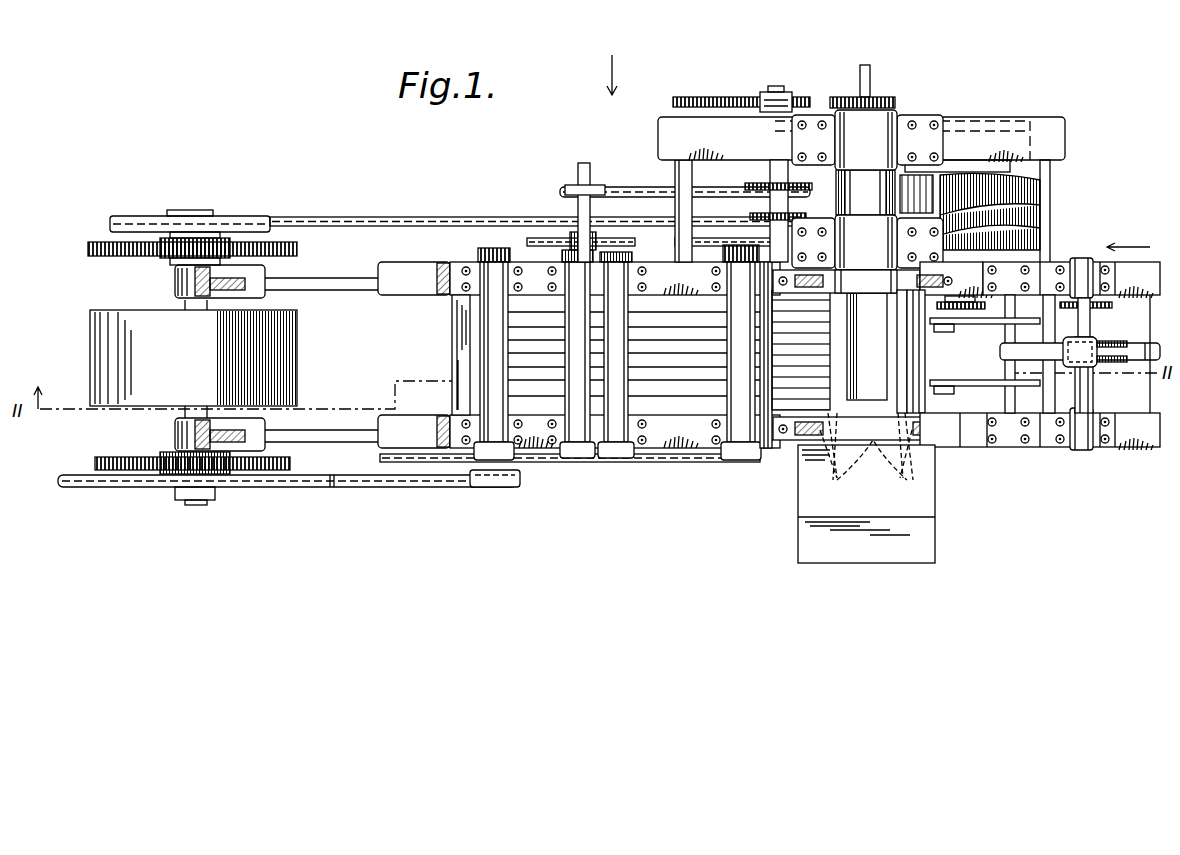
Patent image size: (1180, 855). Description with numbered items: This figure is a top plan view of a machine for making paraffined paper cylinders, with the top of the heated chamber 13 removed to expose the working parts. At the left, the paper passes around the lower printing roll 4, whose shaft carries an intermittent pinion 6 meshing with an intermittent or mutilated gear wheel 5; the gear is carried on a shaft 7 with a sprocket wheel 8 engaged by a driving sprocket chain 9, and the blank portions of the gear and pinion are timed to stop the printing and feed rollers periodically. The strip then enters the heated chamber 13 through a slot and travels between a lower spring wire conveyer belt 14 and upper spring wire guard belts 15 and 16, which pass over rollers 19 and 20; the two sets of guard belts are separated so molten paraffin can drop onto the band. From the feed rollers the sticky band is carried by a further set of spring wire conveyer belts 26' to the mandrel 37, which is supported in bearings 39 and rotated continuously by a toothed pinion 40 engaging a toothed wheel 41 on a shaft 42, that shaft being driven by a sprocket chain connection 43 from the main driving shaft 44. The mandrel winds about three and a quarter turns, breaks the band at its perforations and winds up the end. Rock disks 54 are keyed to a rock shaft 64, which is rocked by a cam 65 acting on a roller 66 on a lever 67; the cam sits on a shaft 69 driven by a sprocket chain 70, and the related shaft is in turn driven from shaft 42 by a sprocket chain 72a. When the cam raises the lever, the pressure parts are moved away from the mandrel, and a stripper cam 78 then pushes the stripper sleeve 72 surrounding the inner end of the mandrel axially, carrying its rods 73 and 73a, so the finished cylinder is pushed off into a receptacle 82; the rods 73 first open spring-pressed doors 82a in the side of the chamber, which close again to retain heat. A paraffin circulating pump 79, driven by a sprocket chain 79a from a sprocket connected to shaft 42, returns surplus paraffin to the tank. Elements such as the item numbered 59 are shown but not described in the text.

The printing roll 4 is at (193, 358).
The intermittent gear wheel 5 is at (136, 254).
The intermittent pinion 6 is at (170, 256).
The shaft 7 is at (190, 201).
The sprocket wheel 8 is at (243, 220).
The driving sprocket chain 9 is at (420, 218).
The heated chamber 13 is at (456, 351).
The lower spring wire conveyer belt 14 is at (597, 397).
The upper spring wire guard belt 15 is at (529, 320).
The upper spring wire guard belt 16 is at (673, 322).
The rollers 19 is at (484, 391).
The rollers 20 is at (624, 398).
The spring wire conveyer belts 26' is at (795, 372).
The mandrel 37 is at (849, 368).
The bearings 39 is at (867, 190).
The toothed pinion 40 is at (895, 103).
The toothed wheel 41 is at (726, 93).
The shaft 42 is at (790, 83).
The sprocket chain connection 43 is at (643, 185).
The main driving shaft 44 is at (578, 173).
The rock disks 54 is at (1004, 380).
The bars 59 is at (994, 325).
The rock shaft 64 is at (1014, 348).
The cam 65 is at (1122, 364).
The roller 66 is at (1090, 339).
The lever 67 is at (1122, 343).
The shaft 69 is at (1088, 375).
The sprocket chain 70 is at (1110, 305).
The stripper sleeve 72 is at (870, 295).
The sprocket chain 72a is at (980, 118).
The rods 73 is at (883, 351).
The rods 73a is at (838, 202).
The stripper cam 78 is at (995, 212).
The paraffin circulating pump 79 is at (568, 243).
The sprocket chain 79a is at (653, 249).
The receptacle 82 is at (866, 504).
The spring-pressed doors 82a is at (912, 465).